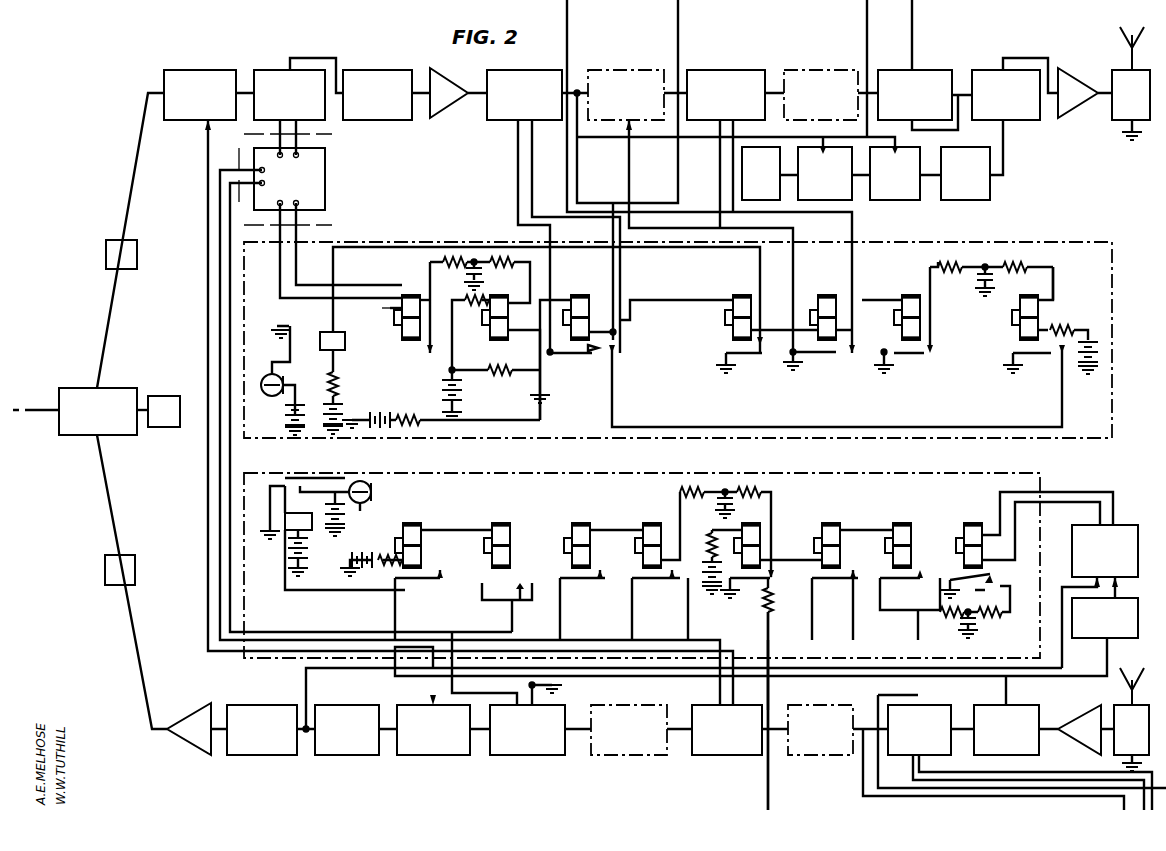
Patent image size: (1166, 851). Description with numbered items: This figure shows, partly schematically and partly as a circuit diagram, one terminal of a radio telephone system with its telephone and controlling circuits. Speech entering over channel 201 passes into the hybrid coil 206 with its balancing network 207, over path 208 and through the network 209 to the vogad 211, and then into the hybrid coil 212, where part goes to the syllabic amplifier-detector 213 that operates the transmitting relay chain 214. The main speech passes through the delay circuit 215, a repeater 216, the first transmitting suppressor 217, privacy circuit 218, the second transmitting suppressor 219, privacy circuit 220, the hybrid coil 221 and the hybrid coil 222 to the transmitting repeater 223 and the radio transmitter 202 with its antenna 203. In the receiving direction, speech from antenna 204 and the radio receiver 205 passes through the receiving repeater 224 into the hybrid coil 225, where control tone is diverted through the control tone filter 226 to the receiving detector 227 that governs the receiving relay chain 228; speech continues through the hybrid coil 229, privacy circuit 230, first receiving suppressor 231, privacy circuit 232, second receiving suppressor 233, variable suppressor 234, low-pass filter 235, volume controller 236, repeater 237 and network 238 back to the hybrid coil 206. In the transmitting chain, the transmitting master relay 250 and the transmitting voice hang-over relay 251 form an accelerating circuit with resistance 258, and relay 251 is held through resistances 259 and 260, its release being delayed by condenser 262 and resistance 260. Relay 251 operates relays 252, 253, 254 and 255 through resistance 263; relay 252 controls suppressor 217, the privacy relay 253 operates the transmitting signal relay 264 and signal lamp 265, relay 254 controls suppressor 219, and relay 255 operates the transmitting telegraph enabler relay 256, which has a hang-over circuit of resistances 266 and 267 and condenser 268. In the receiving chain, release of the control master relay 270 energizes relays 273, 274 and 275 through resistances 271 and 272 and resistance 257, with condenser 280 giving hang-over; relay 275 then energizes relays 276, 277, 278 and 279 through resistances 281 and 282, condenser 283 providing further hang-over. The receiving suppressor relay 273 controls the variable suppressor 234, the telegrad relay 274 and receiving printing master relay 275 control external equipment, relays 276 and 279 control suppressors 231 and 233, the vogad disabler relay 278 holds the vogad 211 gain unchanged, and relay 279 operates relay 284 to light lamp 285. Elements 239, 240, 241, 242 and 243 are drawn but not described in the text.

The channel 201 is at (33, 410).
The radio transmitter 202 is at (1121, 62).
The antenna 203 is at (1118, 32).
The antenna 204 is at (1140, 664).
The radio receiver 205 is at (1120, 700).
The hybrid coil 206 is at (74, 388).
The balancing network 207 is at (167, 396).
The path 208 is at (110, 304).
The network 209 is at (137, 252).
The vogad 211 is at (187, 72).
The hybrid coil 212 is at (298, 70).
The syllabic amplifier-detector 213 is at (325, 172).
The transmitting relay chain 214 is at (370, 242).
The delay circuit 215 is at (364, 72).
The repeater 216 is at (440, 78).
The first transmitting suppressor 217 is at (516, 72).
The privacy circuit 218 is at (618, 72).
The second transmitting suppressor 219 is at (716, 72).
The privacy circuit 220 is at (814, 72).
The hybrid coil 221 is at (918, 72).
The hybrid coil 222 is at (1004, 70).
The transmitting repeater 223 is at (1074, 80).
The receiving repeater 224 is at (1070, 710).
The hybrid coil 225 is at (1040, 744).
The control tone filter 226 is at (1131, 600).
The receiving detector 227 is at (1124, 524).
The receiving relay chain 228 is at (1040, 473).
The hybrid coil 229 is at (945, 698).
The privacy circuit 230 is at (826, 755).
The first receiving suppressor 231 is at (724, 755).
The privacy circuit 232 is at (628, 755).
The second receiving suppressor 233 is at (530, 755).
The variable suppressor 234 is at (445, 755).
The low-pass filter 235 is at (356, 755).
The volume controller 236 is at (278, 755).
The repeater 237 is at (192, 756).
The network 238 is at (135, 570).
The receiving path 239 is at (123, 505).
The oscillator 240 is at (742, 183).
The control tone enabler 241 is at (850, 196).
The control tone compressor 242 is at (910, 202).
The control tone filter 243 is at (976, 202).
The transmitting master relay 250 is at (414, 294).
The transmitting voice hang-over relay 251 is at (519, 298).
The relay 252 is at (581, 296).
The privacy relay 253 is at (751, 294).
The relay 254 is at (836, 294).
The relay 255 is at (906, 294).
The transmitting telegraph enabler relay 256 is at (1042, 296).
The resistance 257 is at (702, 546).
The resistance 258 is at (420, 420).
The resistance 259 is at (454, 264).
The resistance 260 is at (503, 262).
The condenser 262 is at (474, 262).
The resistance 263 is at (500, 374).
The transmitting signal relay 264 is at (345, 348).
The signal lamp 265 is at (274, 380).
The resistance 266 is at (1026, 266).
The resistance 267 is at (941, 266).
The condenser 268 is at (974, 284).
The control master relay 270 is at (972, 522).
The resistance 271 is at (994, 624).
The resistance 272 is at (962, 596).
The receiving suppressor relay 273 is at (904, 522).
The telegrad relay 274 is at (832, 522).
The receiving printing master relay 275 is at (760, 526).
The receiving suppressor relay 276 is at (651, 522).
The relay 277 is at (586, 522).
The vogad disabler relay 278 is at (510, 522).
The receiving suppressor relay 279 is at (419, 522).
The condenser 280 is at (966, 630).
The resistance 281 is at (764, 490).
The resistance 282 is at (686, 490).
The condenser 283 is at (730, 490).
The relay 284 is at (305, 508).
The lamp 285 is at (370, 502).